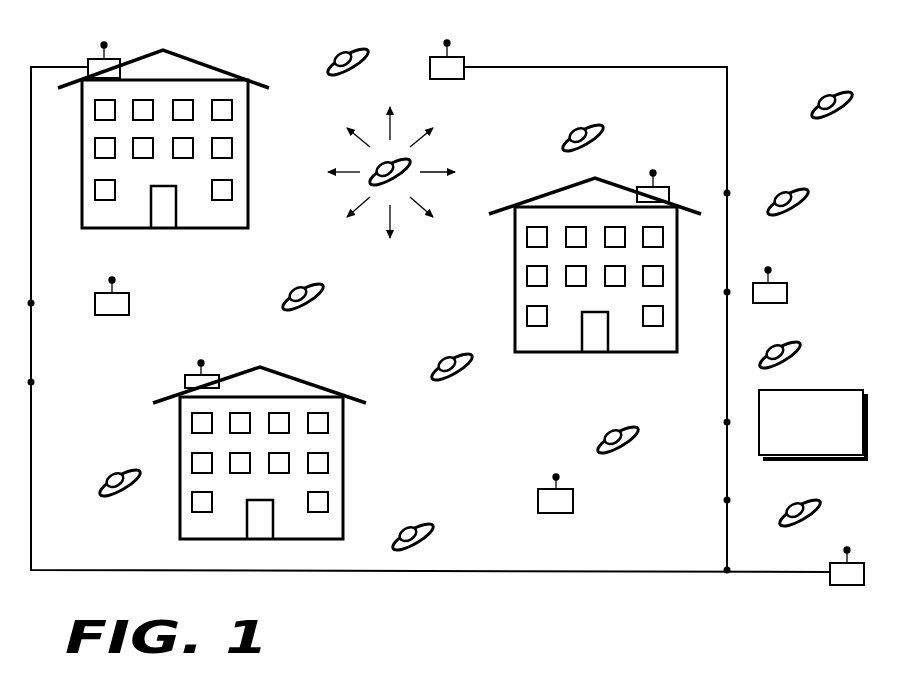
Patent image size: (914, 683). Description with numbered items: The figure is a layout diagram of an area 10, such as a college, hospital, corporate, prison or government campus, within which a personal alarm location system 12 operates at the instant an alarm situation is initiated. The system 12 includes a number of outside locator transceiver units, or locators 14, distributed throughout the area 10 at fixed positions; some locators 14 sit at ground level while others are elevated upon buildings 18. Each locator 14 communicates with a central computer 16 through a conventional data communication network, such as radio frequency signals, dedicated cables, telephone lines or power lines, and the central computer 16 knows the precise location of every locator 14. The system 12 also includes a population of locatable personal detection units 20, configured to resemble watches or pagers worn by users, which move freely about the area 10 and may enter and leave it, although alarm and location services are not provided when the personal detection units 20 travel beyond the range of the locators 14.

The area 10 is at (773, 53).
The personal alarm location system 12 is at (378, 633).
The outside locator transceiver unit 14 is at (93, 57).
The central computer 16 is at (833, 386).
The building 18 is at (224, 70).
The locatable personal detection unit 20 is at (395, 190).